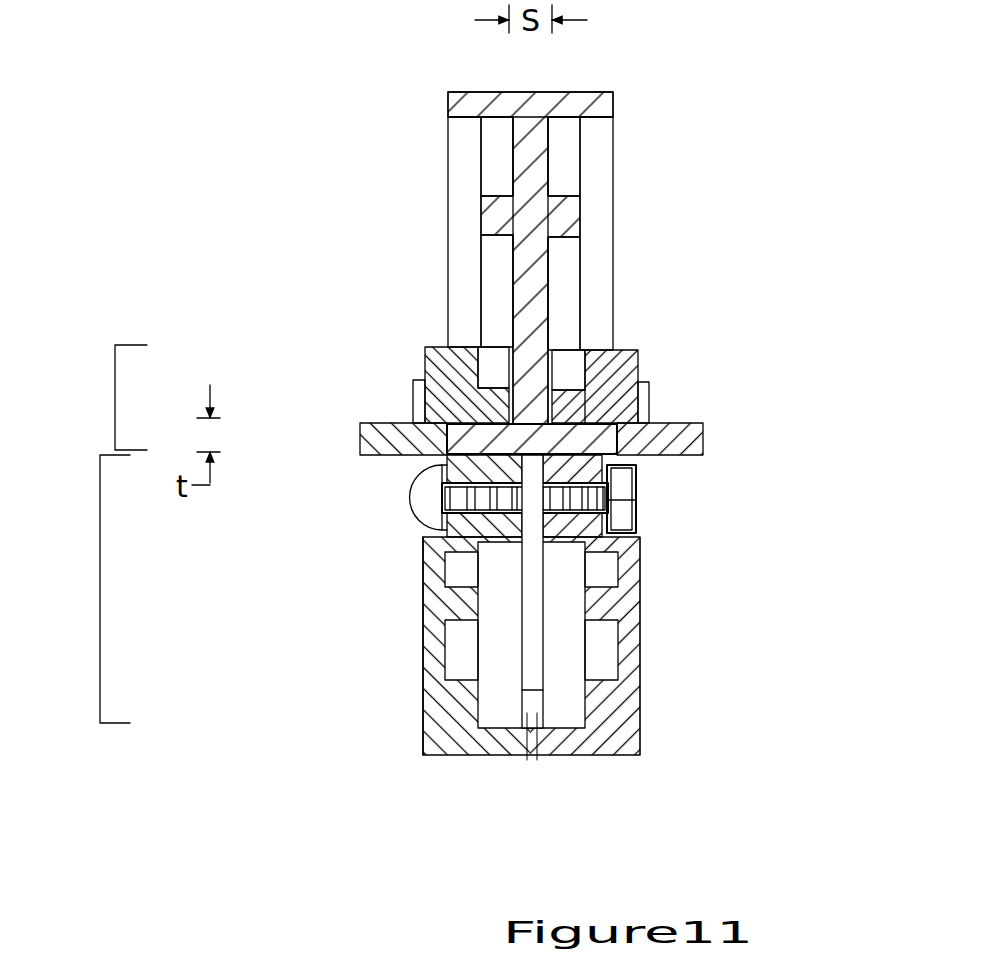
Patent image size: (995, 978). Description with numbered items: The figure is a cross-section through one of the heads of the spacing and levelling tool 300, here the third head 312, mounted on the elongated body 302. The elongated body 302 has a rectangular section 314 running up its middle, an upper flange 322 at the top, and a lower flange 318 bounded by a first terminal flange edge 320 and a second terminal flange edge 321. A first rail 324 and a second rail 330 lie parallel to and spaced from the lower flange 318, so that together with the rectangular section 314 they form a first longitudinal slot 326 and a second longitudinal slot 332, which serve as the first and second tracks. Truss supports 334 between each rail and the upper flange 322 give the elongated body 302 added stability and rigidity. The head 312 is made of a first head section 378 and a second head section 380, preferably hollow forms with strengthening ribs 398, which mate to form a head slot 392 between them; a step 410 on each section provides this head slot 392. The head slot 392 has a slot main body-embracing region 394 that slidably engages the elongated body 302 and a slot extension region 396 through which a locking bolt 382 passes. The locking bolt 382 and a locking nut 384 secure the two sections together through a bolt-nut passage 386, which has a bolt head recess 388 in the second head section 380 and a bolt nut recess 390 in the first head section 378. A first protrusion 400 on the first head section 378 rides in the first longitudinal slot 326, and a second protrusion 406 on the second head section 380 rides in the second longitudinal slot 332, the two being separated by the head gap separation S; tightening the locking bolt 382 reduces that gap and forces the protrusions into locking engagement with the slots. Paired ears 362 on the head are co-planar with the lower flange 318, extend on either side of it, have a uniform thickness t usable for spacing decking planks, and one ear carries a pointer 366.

The spacing and levelling tool 300 is at (193, 82).
The elongated body 302 is at (727, 59).
The third head 312 is at (838, 721).
The rectangular section 314 is at (540, 313).
The lower flange 318 is at (411, 562).
The first terminal flange edge 320 is at (600, 437).
The second terminal flange edge 321 is at (463, 433).
The upper flange 322 is at (467, 107).
The first rail 324 is at (580, 355).
The first longitudinal slot 326 is at (640, 380).
The second rail 330 is at (423, 348).
The second longitudinal slot 332 is at (503, 385).
The truss supports 334 is at (572, 213).
The paired ears 362 is at (357, 439).
The pointer 366 is at (650, 403).
The first head section 378 is at (606, 646).
The second head section 380 is at (314, 646).
The locking bolt 382 is at (415, 510).
The locking nut 384 is at (652, 538).
The bolt-nut passage 386 is at (604, 549).
The bolt head recess 388 is at (418, 532).
The bolt nut recess 390 is at (640, 515).
The head slot 392 is at (641, 597).
The slot main body-embracing region 394 is at (115, 397).
The slot extension region 396 is at (100, 588).
The strengthening ribs 398 is at (605, 612).
The first protrusion 400 is at (705, 359).
The second protrusion 406 is at (422, 379).
The step 410 is at (537, 720).